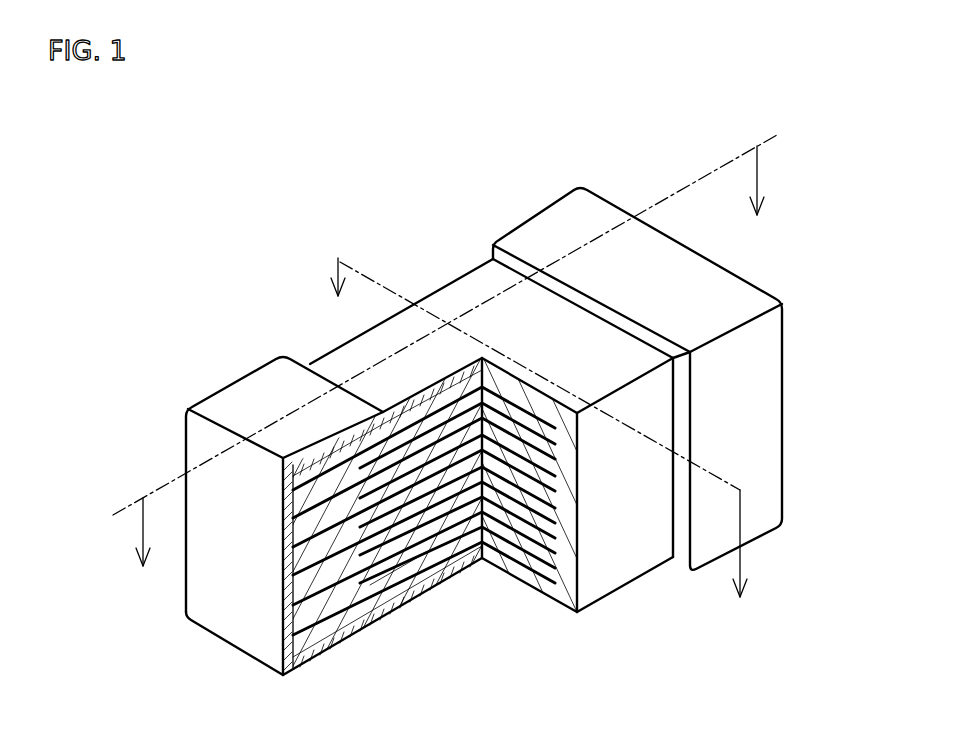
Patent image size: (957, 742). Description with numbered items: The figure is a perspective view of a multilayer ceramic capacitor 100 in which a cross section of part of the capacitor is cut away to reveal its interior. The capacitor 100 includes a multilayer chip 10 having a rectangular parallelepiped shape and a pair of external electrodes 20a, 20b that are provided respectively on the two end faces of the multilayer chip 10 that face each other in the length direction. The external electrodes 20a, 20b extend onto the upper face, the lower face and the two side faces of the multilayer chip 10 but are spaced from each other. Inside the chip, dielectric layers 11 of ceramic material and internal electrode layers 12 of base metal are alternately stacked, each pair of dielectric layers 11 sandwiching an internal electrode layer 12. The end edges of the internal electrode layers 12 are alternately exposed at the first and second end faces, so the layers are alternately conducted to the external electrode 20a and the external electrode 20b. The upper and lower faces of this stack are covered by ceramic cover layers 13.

The multilayer ceramic capacitor 100 is at (880, 122).
The multilayer chip 10 is at (326, 349).
The dielectric layer 11 is at (403, 567).
The internal electrode layer 12 is at (440, 553).
The cover layer 13 is at (456, 302).
The external electrode 20a is at (216, 393).
The external electrode 20b is at (541, 230).